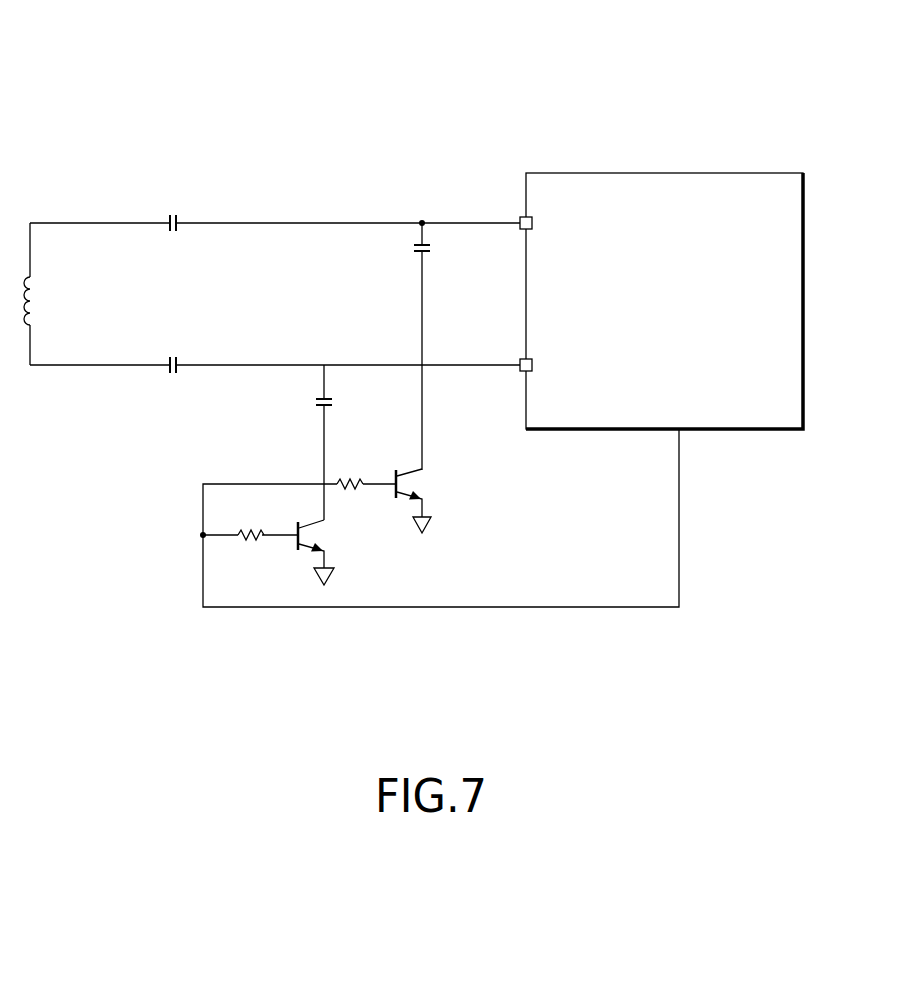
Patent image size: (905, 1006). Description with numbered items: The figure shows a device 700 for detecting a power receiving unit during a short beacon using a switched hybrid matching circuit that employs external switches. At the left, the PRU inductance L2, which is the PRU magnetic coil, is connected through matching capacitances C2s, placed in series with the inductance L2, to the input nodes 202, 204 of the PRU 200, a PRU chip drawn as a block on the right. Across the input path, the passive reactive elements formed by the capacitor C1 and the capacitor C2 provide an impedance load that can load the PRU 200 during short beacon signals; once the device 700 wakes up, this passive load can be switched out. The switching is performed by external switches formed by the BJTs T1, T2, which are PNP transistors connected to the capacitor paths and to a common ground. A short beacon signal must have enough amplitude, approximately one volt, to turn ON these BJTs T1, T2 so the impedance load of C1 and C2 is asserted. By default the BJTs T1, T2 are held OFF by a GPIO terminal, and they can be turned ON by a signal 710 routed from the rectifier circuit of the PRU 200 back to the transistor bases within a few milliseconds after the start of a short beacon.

The device 700 is at (118, 116).
The PRU 200 is at (661, 326).
The input node 202 is at (534, 223).
The input node 204 is at (534, 365).
The signal 710 is at (585, 607).
The PRU inductance L2 is at (43, 301).
The matching capacitances C2s is at (180, 278).
The capacitor C1 is at (438, 345).
The capacitor C2 is at (342, 442).
The BJT T1 is at (280, 552).
The BJT T2 is at (426, 501).